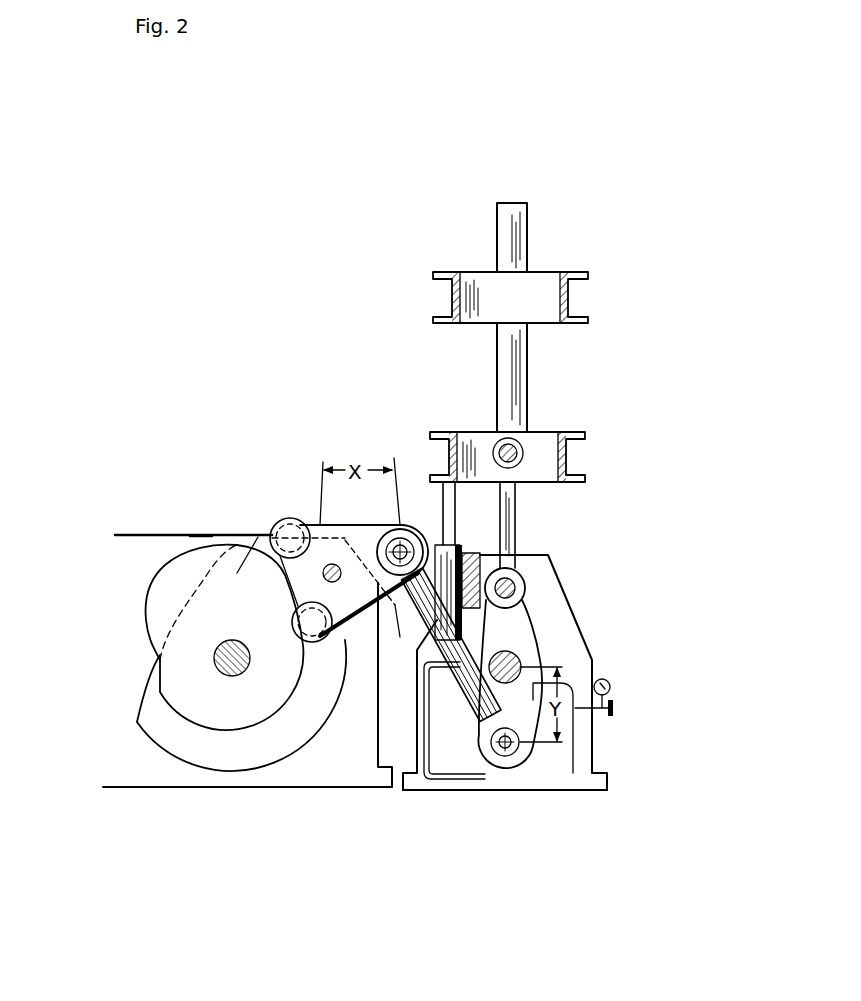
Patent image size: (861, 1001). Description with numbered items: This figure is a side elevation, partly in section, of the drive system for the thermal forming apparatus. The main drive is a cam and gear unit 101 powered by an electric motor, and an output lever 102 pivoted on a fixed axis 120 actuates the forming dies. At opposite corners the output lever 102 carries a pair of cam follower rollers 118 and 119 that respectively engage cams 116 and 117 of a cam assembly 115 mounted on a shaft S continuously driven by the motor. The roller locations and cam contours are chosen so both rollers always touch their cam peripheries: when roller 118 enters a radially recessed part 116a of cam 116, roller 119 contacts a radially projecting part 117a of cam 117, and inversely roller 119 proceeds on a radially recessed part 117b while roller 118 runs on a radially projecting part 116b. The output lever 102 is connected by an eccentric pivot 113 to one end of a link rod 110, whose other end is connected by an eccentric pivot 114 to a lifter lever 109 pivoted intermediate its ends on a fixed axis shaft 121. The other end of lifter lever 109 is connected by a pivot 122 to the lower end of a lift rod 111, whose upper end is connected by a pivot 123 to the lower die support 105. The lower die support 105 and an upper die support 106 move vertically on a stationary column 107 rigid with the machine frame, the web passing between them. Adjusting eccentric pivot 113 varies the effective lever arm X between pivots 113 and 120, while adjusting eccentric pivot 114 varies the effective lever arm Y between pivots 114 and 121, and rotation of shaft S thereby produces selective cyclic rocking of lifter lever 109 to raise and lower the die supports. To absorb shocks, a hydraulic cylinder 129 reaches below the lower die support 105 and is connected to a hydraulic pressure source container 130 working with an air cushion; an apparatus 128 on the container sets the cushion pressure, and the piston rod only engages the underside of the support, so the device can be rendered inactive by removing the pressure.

The cam and gear unit 101 is at (175, 534).
The output lever 102 is at (430, 618).
The lower die support 105 is at (555, 458).
The upper die support 106 is at (545, 290).
The stationary column 107 is at (531, 348).
The lifter lever 109 is at (556, 582).
The link rod 110 is at (460, 792).
The lift rod 111 is at (517, 498).
The eccentric pivot 113 is at (405, 544).
The eccentric pivot 114 is at (503, 757).
The cam assembly 115 is at (159, 555).
The cam disk 116 is at (235, 770).
The radially recessed part 116a is at (139, 712).
The radially projecting part 116b is at (197, 535).
The cam disk 117 is at (192, 659).
The radially projecting part 117a is at (258, 537).
The radially recessed part 117b is at (182, 606).
The cam follower roller 118 is at (295, 518).
The cam follower roller 119 is at (315, 643).
The fixed axis 120 is at (337, 584).
The fixed axis shaft 121 is at (512, 664).
The pivot 122 is at (521, 578).
The pivot 123 is at (519, 446).
The pressure setting apparatus 128 is at (610, 712).
The hydraulic cylinder 129 is at (455, 556).
The hydraulic pressure source container 130 is at (558, 775).
The shaft S is at (221, 652).